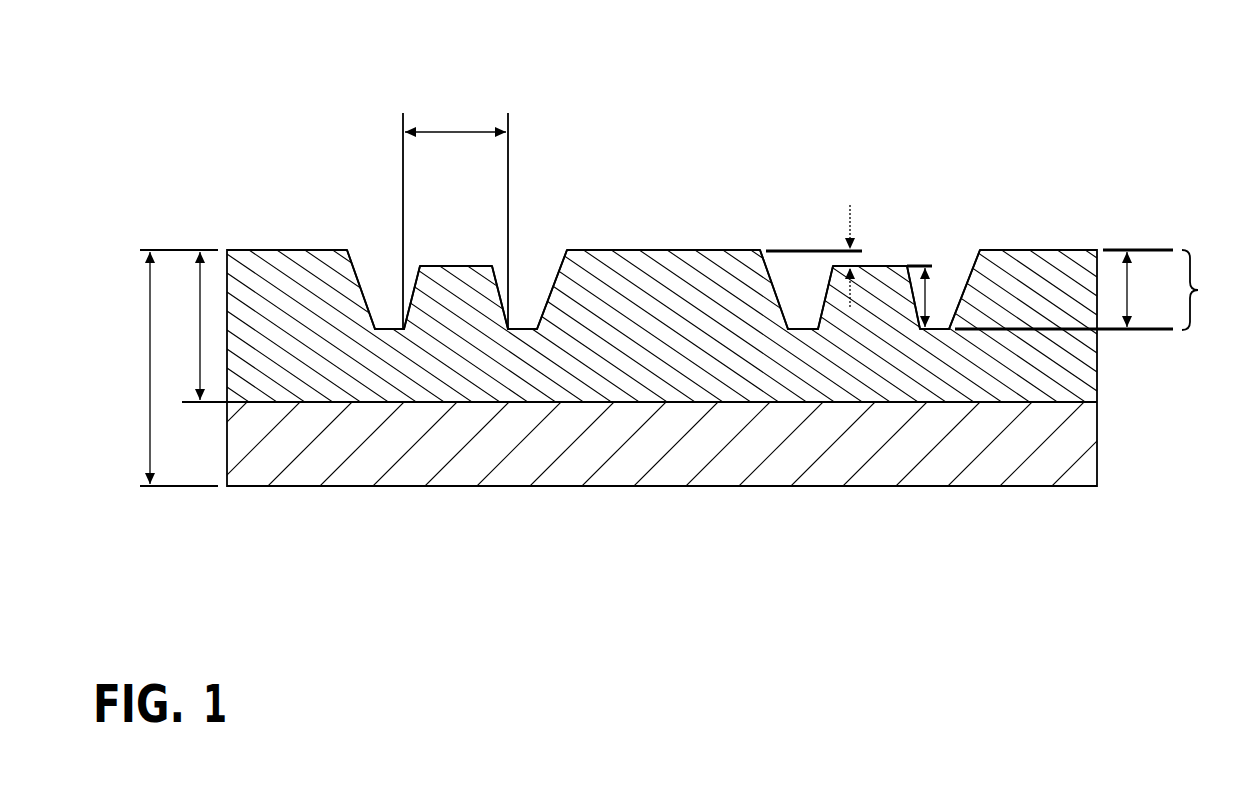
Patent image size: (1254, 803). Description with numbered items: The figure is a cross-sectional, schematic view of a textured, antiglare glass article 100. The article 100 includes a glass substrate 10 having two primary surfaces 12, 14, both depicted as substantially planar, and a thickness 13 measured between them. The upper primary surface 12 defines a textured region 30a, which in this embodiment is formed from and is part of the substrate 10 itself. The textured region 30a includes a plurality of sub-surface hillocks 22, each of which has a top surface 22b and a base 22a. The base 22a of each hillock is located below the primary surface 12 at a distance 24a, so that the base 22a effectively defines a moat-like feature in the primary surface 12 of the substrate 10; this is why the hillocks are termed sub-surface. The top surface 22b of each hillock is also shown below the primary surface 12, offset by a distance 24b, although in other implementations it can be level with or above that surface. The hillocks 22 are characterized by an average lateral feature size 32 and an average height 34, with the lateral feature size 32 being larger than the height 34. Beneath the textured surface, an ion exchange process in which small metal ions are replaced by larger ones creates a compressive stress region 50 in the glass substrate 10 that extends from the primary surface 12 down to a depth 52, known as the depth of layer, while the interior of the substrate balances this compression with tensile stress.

The textured glass article 100 is at (250, 94).
The glass substrate 10 is at (1042, 459).
The primary surface 12 is at (1067, 247).
The thickness 13 is at (149, 406).
The primary surface 14 is at (938, 489).
The sub-surface hillocks 22 is at (505, 275).
The base 22a is at (947, 321).
The top surface 22b is at (885, 255).
The distance 24a is at (1130, 293).
The distance 24b is at (850, 205).
The textured region 30a is at (1185, 290).
The average lateral feature size 32 is at (448, 130).
The average height 34 is at (926, 294).
The compressive stress region 50 is at (1047, 391).
The depth 52 is at (198, 308).